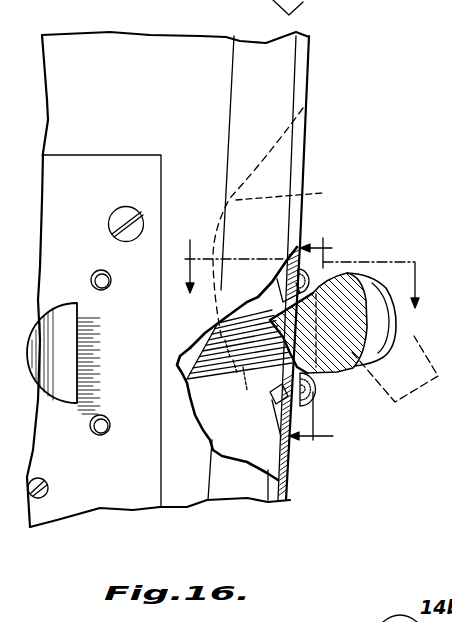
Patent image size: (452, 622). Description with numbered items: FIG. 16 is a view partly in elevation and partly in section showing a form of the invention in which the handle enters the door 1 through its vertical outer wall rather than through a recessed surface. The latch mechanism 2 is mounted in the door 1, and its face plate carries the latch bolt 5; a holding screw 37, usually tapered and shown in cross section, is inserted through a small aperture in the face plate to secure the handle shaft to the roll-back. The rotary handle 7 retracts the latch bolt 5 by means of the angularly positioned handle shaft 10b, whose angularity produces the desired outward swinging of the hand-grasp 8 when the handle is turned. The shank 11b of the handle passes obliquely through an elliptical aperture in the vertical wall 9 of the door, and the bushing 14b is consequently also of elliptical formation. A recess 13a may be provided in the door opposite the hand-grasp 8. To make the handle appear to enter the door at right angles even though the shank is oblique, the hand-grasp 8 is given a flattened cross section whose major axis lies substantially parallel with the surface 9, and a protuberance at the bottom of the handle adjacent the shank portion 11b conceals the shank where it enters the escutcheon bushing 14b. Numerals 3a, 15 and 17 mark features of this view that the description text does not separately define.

The door 1 is at (137, 48).
The latch mechanism 2 is at (100, 131).
The fastening screw 3a is at (109, 207).
The latch bolt 5 is at (65, 318).
The rotary handle 7 is at (367, 280).
The hand-grasp 8 is at (393, 320).
The outer surface of the door 9 is at (313, 75).
The handle shaft 10b is at (186, 398).
The handle shank 11b is at (270, 406).
The recess 13a is at (289, 224).
The bushing 14b is at (312, 410).
The direction arrows 15 is at (306, 278).
The wall opening 17 is at (326, 342).
The holding screw 37 is at (49, 488).